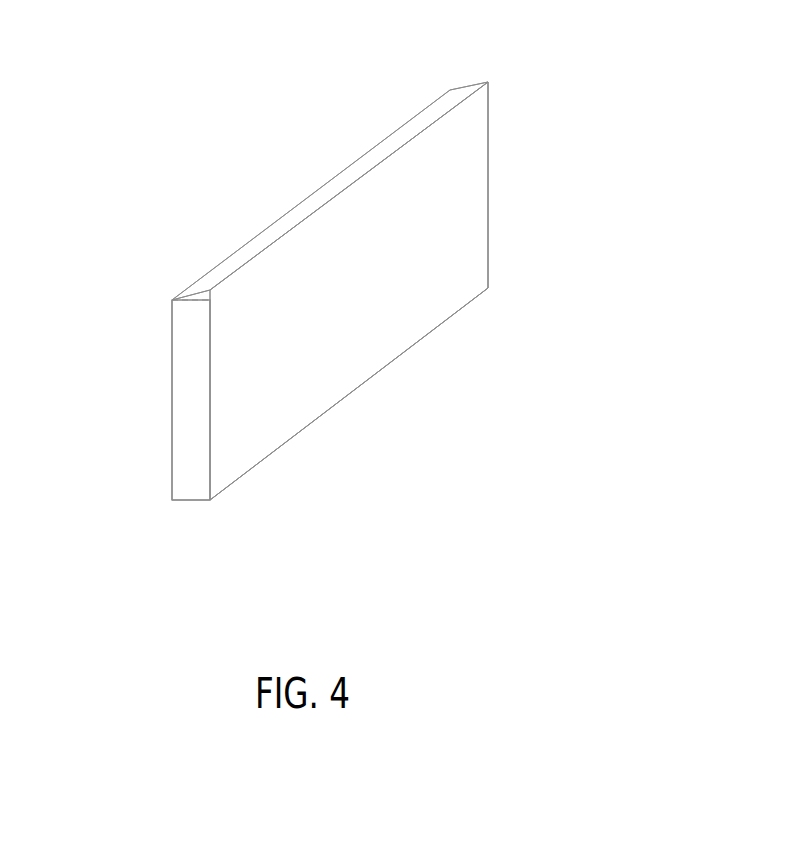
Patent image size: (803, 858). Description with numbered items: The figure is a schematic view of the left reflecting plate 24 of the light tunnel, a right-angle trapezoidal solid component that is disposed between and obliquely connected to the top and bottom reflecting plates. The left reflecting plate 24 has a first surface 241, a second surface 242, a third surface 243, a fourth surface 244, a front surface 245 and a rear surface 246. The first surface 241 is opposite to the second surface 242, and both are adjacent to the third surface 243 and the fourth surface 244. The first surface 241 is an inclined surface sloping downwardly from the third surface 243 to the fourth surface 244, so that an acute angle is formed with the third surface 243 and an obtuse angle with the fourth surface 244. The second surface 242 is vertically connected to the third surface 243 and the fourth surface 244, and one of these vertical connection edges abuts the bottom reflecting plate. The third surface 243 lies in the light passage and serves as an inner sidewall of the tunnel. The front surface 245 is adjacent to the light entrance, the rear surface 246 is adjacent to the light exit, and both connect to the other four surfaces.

The left reflecting plate 24 is at (88, 52).
The first surface 241 is at (278, 232).
The second surface 242 is at (193, 503).
The third surface 243 is at (275, 425).
The fourth surface 244 is at (172, 355).
The front surface 245 is at (182, 436).
The rear surface 246 is at (488, 168).